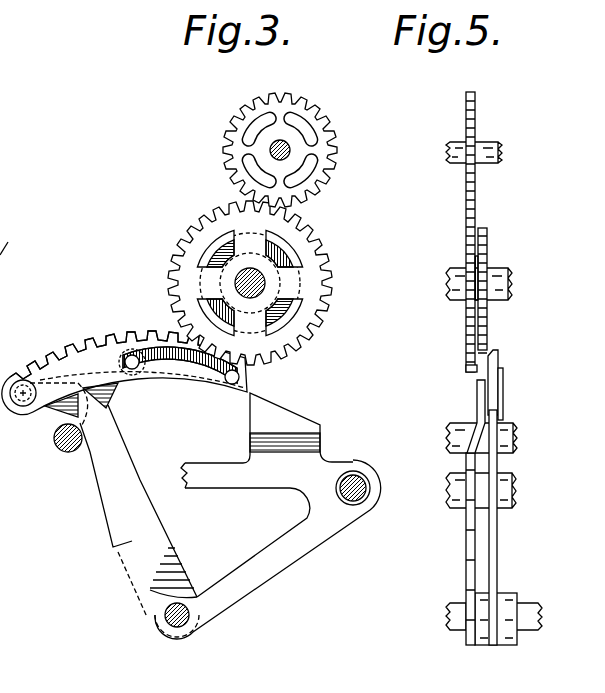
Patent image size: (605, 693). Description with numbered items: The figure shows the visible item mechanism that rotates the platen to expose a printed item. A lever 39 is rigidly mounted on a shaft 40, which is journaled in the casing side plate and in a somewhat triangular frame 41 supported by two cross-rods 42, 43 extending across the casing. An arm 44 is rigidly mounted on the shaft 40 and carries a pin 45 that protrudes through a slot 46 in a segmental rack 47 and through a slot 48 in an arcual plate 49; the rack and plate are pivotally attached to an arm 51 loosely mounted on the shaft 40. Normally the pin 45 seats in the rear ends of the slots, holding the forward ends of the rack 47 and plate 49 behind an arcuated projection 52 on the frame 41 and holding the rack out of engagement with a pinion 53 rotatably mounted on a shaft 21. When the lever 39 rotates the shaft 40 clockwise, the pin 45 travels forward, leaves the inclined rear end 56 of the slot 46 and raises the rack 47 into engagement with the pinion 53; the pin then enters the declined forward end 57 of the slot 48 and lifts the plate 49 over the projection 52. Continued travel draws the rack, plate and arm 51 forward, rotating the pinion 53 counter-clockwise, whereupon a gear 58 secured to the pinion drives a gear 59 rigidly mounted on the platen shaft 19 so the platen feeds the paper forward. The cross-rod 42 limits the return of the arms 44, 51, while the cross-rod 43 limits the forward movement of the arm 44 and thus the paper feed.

In FIG. 3, the platen shaft 19 is at (276, 147).
In FIG. 5, the platen shaft 19 is at (498, 148).
In FIG. 3, the gear 59 is at (333, 172).
In FIG. 5, the gear 59 is at (466, 110).
In FIG. 3, the pinion 53 is at (225, 240).
In FIG. 5, the pinion 53 is at (487, 232).
In FIG. 3, the gear 58 is at (318, 252).
In FIG. 5, the gear 58 is at (470, 262).
In FIG. 3, the shaft 21 is at (262, 292).
In FIG. 5, the shaft 21 is at (445, 283).
In FIG. 3, the lever 39 is at (13, 238).
In FIG. 3, the inclined rear end of slot 56 is at (137, 355).
In FIG. 3, the segmental rack 47 is at (63, 352).
In FIG. 5, the segmental rack 47 is at (492, 355).
In FIG. 3, the pin 45 is at (107, 350).
In FIG. 3, the slot 46 is at (140, 358).
In FIG. 3, the arcual plate 49 is at (58, 373).
In FIG. 5, the arcual plate 49 is at (468, 366).
In FIG. 3, the arm 44 is at (110, 397).
In FIG. 5, the arm 44 is at (503, 385).
In FIG. 3, the slot 48 is at (175, 363).
In FIG. 3, the declined forward end of slot 57 is at (230, 385).
In FIG. 3, the projection 52 is at (290, 406).
In FIG. 5, the projection 52 is at (478, 400).
In FIG. 3, the cross-rod 42 is at (56, 452).
In FIG. 5, the cross-rod 42 is at (447, 432).
In FIG. 3, the cross-rod 43 is at (372, 490).
In FIG. 5, the cross-rod 43 is at (450, 490).
In FIG. 3, the frame 41 is at (272, 552).
In FIG. 5, the frame 41 is at (466, 560).
In FIG. 3, the arm 51 is at (127, 518).
In FIG. 5, the arm 51 is at (497, 440).
In FIG. 3, the shaft 40 is at (165, 618).
In FIG. 5, the shaft 40 is at (448, 612).